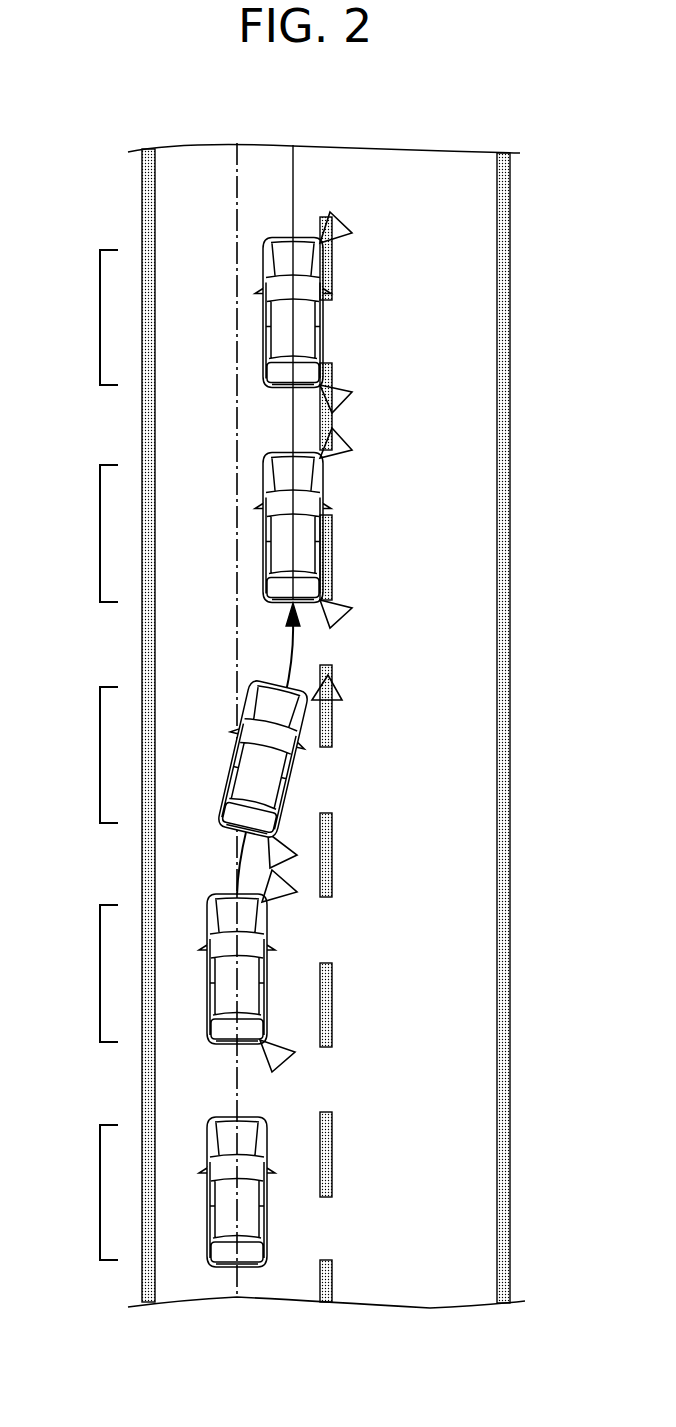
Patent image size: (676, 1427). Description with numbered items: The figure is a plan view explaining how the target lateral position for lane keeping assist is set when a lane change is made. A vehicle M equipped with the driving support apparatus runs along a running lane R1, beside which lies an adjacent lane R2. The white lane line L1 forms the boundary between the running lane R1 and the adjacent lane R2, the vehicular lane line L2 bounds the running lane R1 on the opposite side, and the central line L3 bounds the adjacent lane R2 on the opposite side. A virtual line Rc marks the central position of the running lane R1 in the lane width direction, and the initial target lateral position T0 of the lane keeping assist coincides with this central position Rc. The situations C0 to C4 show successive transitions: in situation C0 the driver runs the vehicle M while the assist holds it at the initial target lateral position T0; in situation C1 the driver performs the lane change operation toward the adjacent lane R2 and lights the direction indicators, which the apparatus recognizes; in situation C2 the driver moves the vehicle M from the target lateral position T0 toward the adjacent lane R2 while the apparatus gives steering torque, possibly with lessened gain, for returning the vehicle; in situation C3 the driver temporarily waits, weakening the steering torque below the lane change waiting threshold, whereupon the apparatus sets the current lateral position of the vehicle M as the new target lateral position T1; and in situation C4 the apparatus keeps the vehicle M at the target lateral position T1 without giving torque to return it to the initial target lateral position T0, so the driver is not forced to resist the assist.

The vehicle M is at (207, 753).
The situation of lane keeping assist at initial target lateral position C0 is at (100, 1190).
The situation of lane change operation C1 is at (100, 974).
The situation of movement in lane change direction C2 is at (100, 749).
The situation of temporary waiting in lane change C3 is at (100, 542).
The situation of continued temporary waiting C4 is at (100, 315).
The lane line L1 is at (322, 213).
The vehicular lane line L2 is at (141, 172).
The central line L3 is at (511, 191).
The running lane R1 is at (188, 152).
The adjacent lane R2 is at (460, 161).
The central position of running lane Rc is at (138, 720).
The initial target lateral position T0 is at (237, 219).
The new target lateral position T1 is at (296, 190).